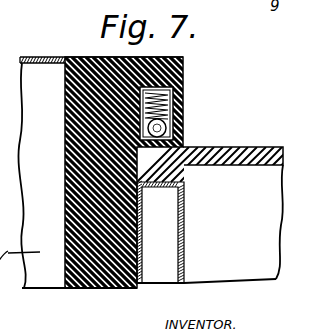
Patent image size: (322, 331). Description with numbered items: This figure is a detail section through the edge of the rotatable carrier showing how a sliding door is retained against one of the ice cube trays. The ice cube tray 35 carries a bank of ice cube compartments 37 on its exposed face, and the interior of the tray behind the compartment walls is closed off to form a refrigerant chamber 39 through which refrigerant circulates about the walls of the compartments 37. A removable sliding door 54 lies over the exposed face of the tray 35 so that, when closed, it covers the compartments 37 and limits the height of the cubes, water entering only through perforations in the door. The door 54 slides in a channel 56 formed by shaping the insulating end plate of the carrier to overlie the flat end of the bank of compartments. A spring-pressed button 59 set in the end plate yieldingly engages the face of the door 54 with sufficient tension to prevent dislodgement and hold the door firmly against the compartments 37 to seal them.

The ice cube tray 35 is at (152, 261).
The ice cube compartments 37 is at (233, 272).
The refrigerant chambers 39 is at (162, 272).
The sliding door 54 is at (231, 179).
The channels 56 is at (191, 140).
The spring-pressed buttons 59 is at (181, 102).